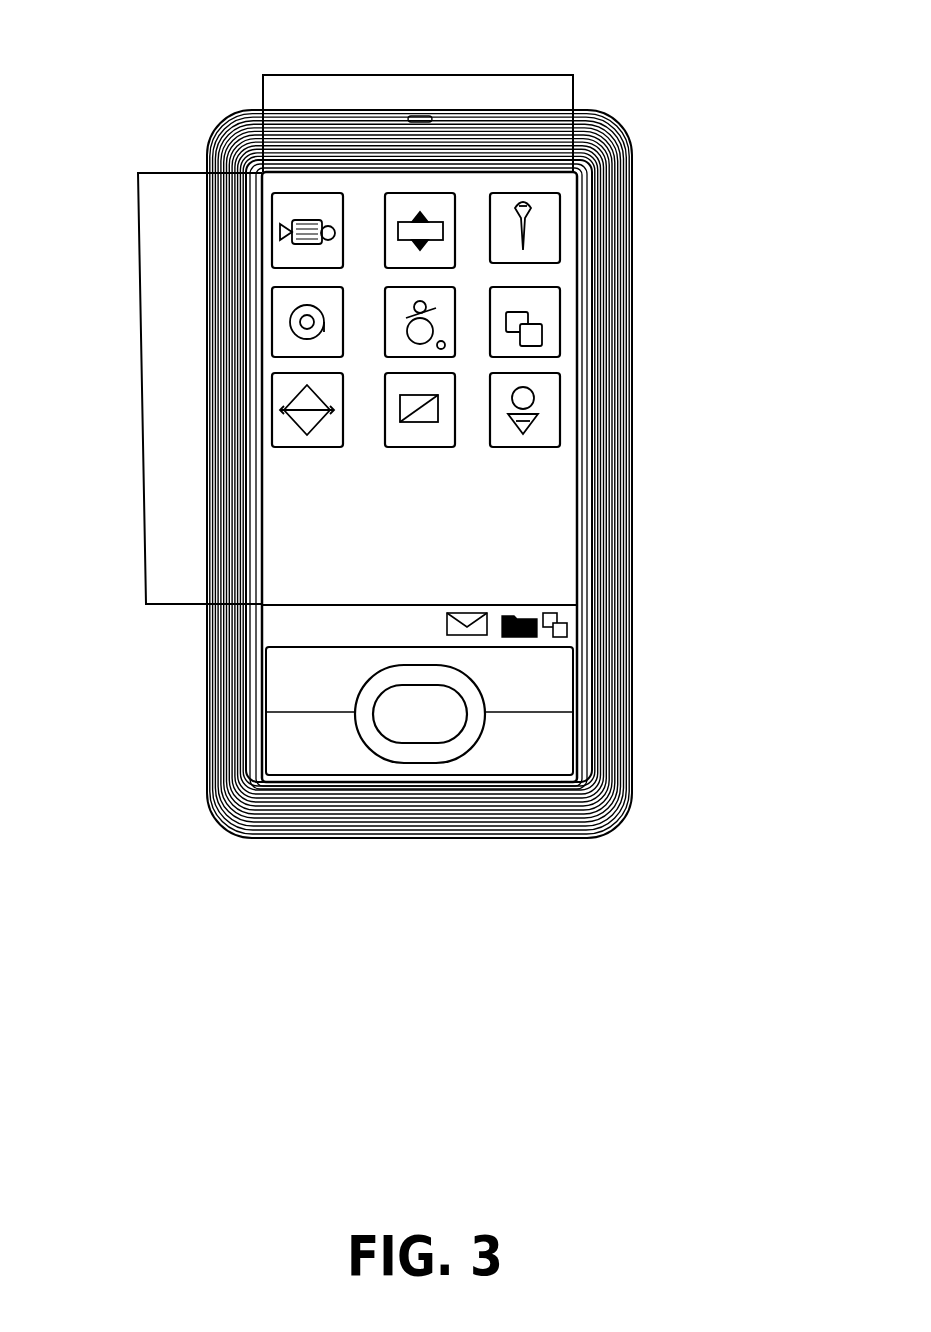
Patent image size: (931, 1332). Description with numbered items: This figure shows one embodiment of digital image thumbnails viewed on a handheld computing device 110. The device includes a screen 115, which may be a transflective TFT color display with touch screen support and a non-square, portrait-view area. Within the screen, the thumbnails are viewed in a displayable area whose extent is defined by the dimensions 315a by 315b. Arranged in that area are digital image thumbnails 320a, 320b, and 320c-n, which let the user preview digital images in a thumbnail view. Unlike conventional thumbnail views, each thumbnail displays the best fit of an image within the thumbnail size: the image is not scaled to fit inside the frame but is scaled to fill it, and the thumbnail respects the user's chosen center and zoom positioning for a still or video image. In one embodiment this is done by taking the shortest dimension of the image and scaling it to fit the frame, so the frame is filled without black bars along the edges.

The handheld computing device 110 is at (633, 722).
The screen 115 is at (565, 500).
The displayable area dimension 315a is at (142, 382).
The displayable area dimension 315b is at (419, 75).
The digital image thumbnail 320a is at (287, 198).
The digital image thumbnail 320b is at (440, 198).
The digital image thumbnails 320c-n is at (545, 402).